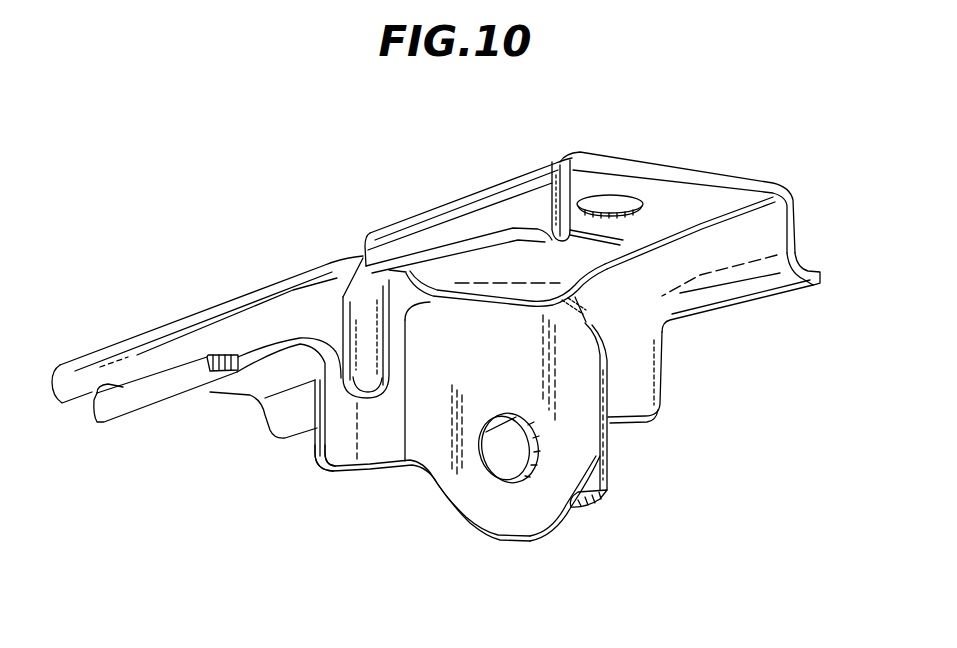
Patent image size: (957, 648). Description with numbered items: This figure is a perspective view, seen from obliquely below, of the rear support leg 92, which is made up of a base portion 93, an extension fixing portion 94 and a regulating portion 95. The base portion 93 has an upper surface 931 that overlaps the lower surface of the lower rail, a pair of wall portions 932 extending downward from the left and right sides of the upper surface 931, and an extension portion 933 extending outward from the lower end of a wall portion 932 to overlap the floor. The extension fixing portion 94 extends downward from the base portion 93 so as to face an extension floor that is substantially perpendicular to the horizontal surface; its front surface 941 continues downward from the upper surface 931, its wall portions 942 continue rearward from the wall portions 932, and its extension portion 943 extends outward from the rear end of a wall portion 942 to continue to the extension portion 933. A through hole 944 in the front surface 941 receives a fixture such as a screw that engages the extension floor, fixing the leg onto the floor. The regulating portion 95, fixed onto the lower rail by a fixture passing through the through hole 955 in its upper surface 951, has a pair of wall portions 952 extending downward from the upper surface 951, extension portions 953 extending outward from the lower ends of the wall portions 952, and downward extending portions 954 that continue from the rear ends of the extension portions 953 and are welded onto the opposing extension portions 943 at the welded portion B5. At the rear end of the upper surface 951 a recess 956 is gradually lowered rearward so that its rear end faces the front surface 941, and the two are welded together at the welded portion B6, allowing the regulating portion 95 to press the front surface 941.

The rear support leg 92 is at (356, 156).
The base portion 93 is at (210, 294).
The upper surface 931 is at (237, 391).
The wall portions 932 is at (88, 388).
The extension portion 933 is at (163, 399).
The extension fixing portion 94 is at (455, 537).
The front surface 941 is at (556, 500).
The wall portions 942 is at (383, 458).
The extension portion 943 is at (320, 451).
The through hole 944 is at (520, 482).
The regulating portion 95 is at (669, 160).
The upper surface 951 is at (716, 179).
The wall portions 952 is at (561, 207).
The extension portions 953 is at (453, 247).
The downward extending portions 954 is at (372, 300).
The through hole 955 is at (604, 203).
The recess 956 is at (588, 297).
The welded portion B5 is at (350, 401).
The welded portion B6 is at (487, 299).